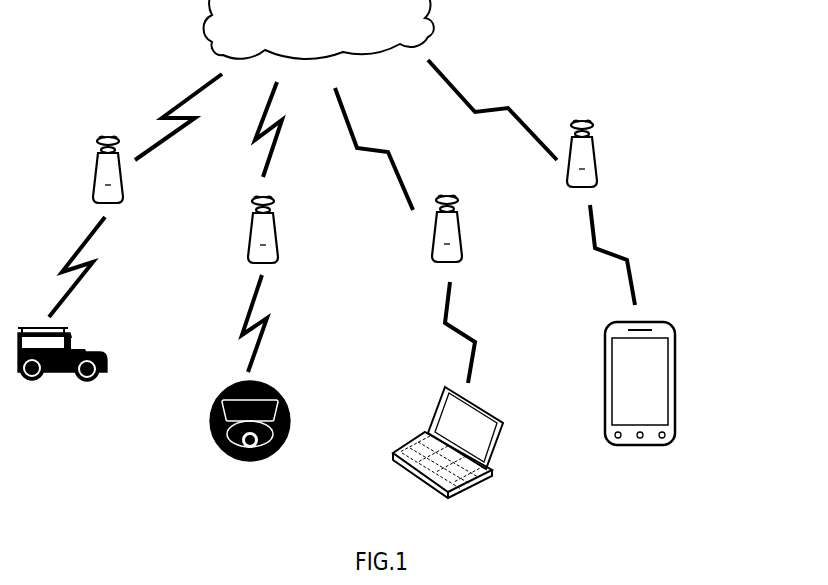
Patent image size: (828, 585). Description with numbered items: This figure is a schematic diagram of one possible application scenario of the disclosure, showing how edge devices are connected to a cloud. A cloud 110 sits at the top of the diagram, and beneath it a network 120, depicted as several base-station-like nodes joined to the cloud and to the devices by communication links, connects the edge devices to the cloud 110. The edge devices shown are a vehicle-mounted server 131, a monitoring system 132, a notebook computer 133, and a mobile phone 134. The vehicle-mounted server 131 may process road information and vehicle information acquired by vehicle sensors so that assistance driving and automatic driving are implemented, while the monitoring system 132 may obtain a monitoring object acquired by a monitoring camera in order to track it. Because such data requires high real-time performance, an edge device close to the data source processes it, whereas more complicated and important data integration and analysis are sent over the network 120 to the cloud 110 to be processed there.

The cloud 110 is at (319, 29).
The network 120 is at (338, 192).
The vehicle-mounted server 131 is at (62, 371).
The monitoring system 132 is at (268, 421).
The notebook computer 133 is at (457, 440).
The mobile phone 134 is at (666, 383).